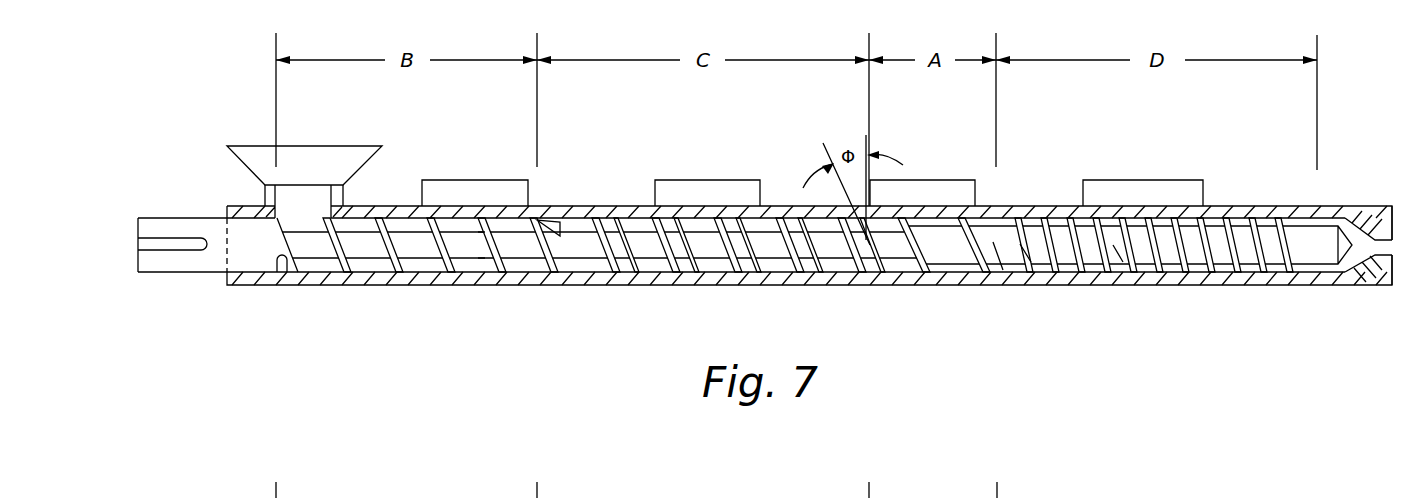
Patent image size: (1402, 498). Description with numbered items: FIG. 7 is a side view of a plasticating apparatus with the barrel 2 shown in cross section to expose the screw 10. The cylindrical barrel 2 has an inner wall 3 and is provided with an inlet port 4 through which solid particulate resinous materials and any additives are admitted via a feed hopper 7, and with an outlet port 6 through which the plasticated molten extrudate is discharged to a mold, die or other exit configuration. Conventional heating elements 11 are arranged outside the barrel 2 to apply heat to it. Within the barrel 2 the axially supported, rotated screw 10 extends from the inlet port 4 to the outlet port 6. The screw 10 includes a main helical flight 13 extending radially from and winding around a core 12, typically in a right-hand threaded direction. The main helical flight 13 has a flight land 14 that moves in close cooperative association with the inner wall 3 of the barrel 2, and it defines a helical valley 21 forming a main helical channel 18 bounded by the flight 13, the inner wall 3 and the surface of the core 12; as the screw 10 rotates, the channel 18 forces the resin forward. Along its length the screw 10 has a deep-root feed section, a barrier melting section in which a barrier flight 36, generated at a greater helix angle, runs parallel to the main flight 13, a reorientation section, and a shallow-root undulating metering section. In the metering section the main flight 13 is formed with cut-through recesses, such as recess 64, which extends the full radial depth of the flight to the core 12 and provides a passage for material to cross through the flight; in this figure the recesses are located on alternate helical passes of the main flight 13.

The barrel 2 is at (1237, 207).
The inner wall 3 is at (1305, 235).
The inlet port 4 is at (320, 200).
The outlet port 6 is at (1387, 257).
The feed hopper 7 is at (245, 167).
The screw 10 is at (517, 236).
The heating elements 11 is at (450, 180).
The core 12 is at (522, 258).
The main helical flight 13 is at (493, 265).
The flight land 14 is at (663, 268).
The main helical channel 18 is at (417, 263).
The helical valley 21 is at (590, 263).
The barrier flight 36 is at (648, 220).
The cut-through recess 64 is at (1115, 248).